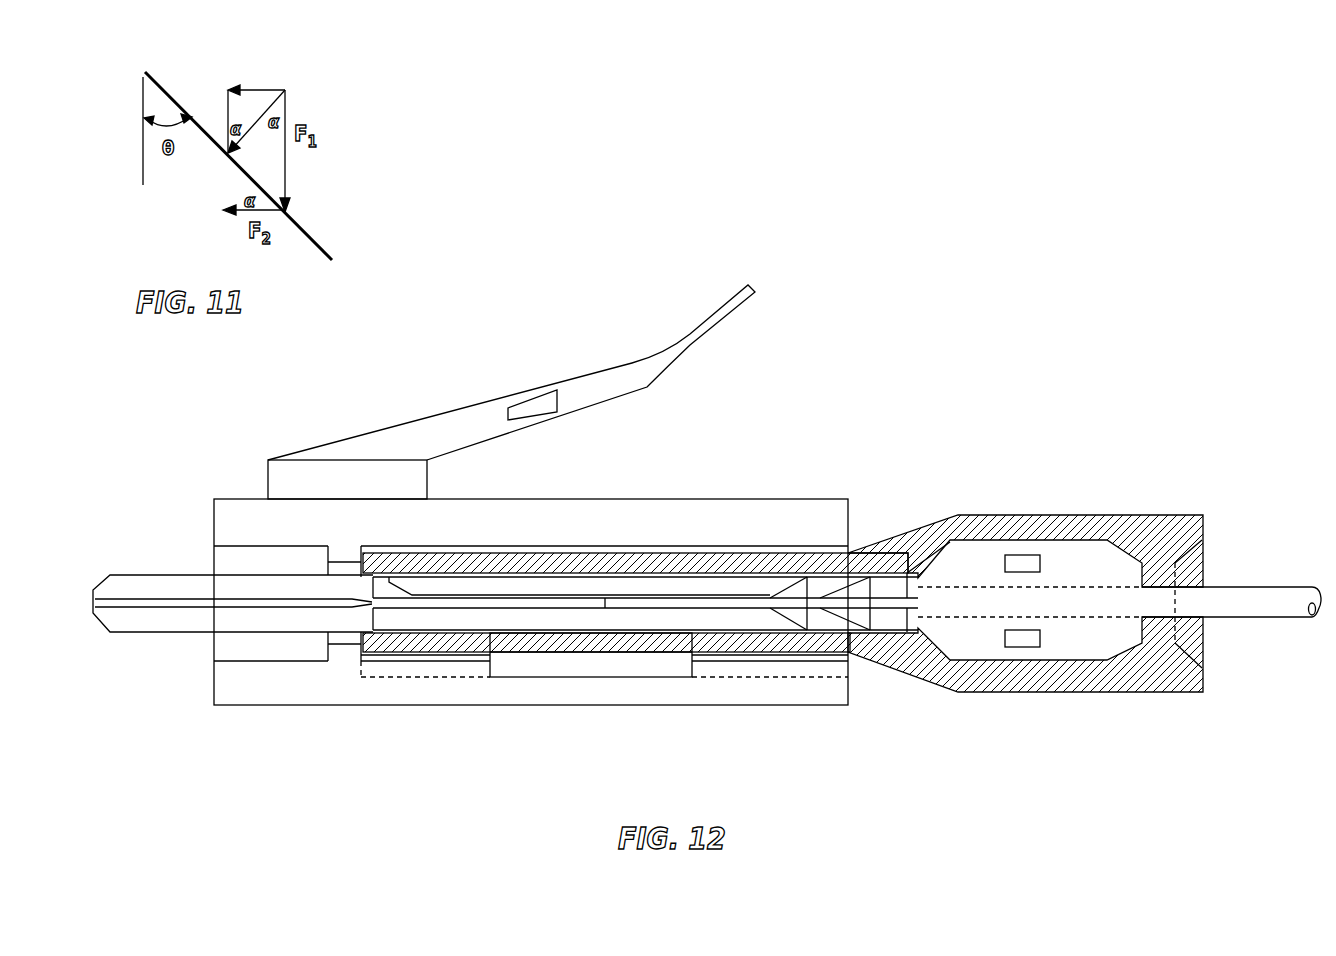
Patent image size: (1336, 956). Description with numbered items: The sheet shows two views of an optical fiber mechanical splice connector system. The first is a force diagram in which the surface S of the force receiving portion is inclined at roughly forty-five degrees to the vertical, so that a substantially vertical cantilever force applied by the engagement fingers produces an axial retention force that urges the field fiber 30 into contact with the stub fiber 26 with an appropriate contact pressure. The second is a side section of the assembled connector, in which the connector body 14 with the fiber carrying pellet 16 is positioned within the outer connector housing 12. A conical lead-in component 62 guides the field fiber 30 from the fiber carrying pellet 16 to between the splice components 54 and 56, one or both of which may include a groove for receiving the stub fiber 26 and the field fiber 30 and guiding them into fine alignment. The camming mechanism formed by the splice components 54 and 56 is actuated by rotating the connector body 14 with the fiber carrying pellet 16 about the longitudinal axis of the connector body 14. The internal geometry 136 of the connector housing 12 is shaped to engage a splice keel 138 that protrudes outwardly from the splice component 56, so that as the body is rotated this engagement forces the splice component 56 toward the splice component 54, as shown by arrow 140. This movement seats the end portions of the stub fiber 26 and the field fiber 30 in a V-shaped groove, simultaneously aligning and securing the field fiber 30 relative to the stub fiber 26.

In FIG. 11, the surface S is at (182, 110).
In FIG. 12, the outer connector housing 12 is at (703, 488).
In FIG. 12, the connector body 14 is at (1084, 530).
In FIG. 12, the fiber carrying pellet 16 is at (1081, 530).
In FIG. 12, the stub fiber 26 is at (387, 603).
In FIG. 12, the field fiber 30 is at (1257, 607).
In FIG. 12, the splice component 54 is at (550, 587).
In FIG. 12, the splice component 56 is at (523, 625).
In FIG. 12, the conical lead-in component 62 is at (825, 625).
In FIG. 12, the internal geometry 136 is at (748, 660).
In FIG. 12, the splice keel 138 is at (588, 657).
In FIG. 12, the arrow 140 is at (628, 702).